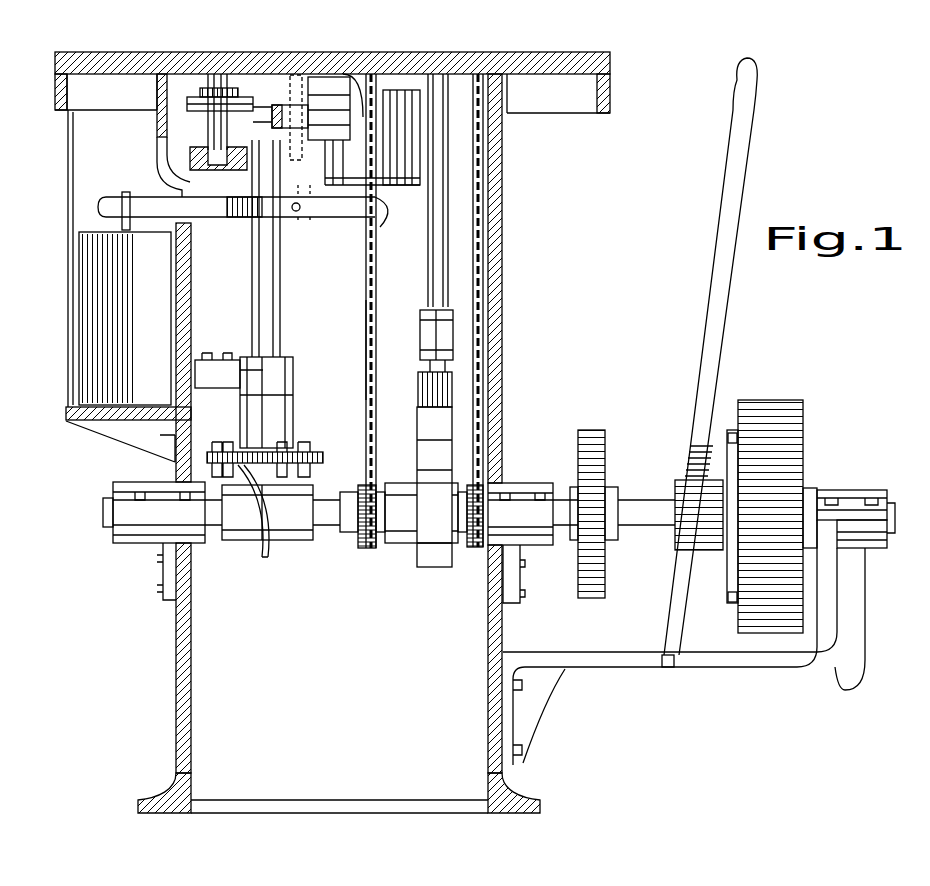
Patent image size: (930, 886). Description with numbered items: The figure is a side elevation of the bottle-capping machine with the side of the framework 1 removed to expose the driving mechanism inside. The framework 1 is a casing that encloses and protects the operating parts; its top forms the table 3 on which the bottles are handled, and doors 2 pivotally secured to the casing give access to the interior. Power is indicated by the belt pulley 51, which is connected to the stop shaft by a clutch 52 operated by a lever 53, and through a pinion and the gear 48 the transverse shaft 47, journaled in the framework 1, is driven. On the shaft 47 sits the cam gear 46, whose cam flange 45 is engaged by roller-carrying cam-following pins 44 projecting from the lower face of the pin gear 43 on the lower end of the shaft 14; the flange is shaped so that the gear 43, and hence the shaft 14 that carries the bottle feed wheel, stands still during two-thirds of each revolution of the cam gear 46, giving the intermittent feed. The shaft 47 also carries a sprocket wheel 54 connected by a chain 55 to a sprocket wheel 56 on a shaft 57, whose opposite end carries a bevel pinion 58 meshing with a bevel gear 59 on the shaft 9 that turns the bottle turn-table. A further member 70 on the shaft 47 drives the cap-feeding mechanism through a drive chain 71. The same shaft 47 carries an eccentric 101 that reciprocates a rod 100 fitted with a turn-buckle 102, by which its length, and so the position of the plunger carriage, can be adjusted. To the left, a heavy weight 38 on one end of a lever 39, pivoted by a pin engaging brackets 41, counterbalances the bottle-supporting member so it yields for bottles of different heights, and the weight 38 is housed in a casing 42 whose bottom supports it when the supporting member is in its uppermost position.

The framework 1 is at (494, 385).
The doors 2 is at (97, 35).
The table 3 is at (600, 78).
The shaft 9 is at (222, 128).
The shaft 14 is at (270, 320).
The weight 38 is at (90, 330).
The lever 39 is at (145, 207).
The brackets 41 is at (385, 205).
The casing 42 is at (70, 378).
The gear 43 is at (310, 450).
The cam-following pins 44 is at (312, 470).
The cam flange 45 is at (258, 550).
The cam gear 46 is at (233, 540).
The transverse shaft 47 is at (336, 527).
The gear 48 is at (603, 436).
The belt pulley 51 is at (790, 452).
The clutch 52 is at (708, 480).
The lever 53 is at (712, 360).
The sprocket wheel 54 is at (375, 485).
The chain 55 is at (370, 356).
The sprocket wheel 56 is at (400, 74).
The shaft 57 is at (371, 74).
The bevel pinion 58 is at (250, 170).
The bevel gear 59 is at (200, 110).
The sprocket 70 is at (503, 470).
The drive chain 71 is at (476, 295).
The rod 100 is at (440, 232).
The eccentric 101 is at (445, 455).
The turn-buckle 102 is at (425, 333).